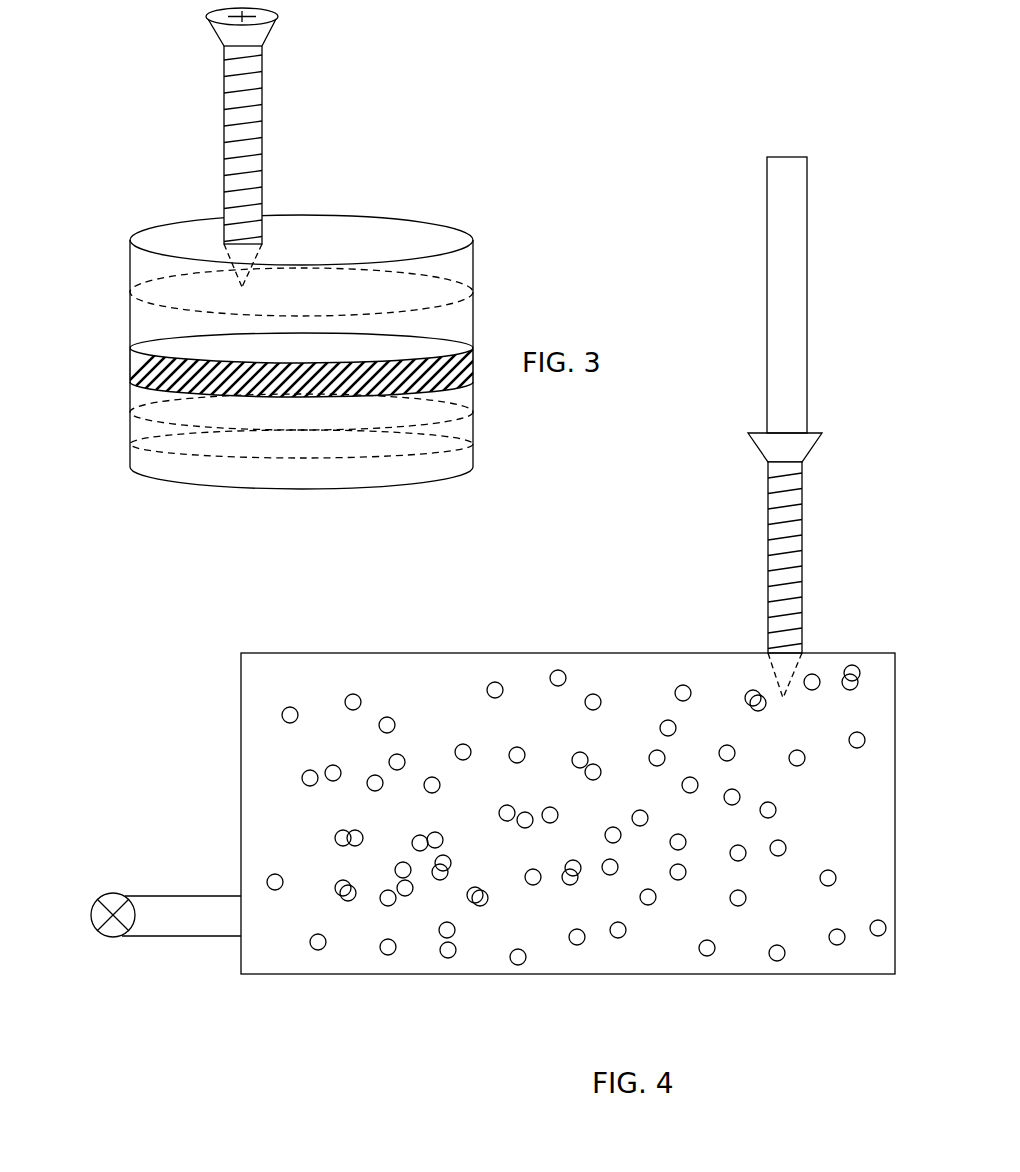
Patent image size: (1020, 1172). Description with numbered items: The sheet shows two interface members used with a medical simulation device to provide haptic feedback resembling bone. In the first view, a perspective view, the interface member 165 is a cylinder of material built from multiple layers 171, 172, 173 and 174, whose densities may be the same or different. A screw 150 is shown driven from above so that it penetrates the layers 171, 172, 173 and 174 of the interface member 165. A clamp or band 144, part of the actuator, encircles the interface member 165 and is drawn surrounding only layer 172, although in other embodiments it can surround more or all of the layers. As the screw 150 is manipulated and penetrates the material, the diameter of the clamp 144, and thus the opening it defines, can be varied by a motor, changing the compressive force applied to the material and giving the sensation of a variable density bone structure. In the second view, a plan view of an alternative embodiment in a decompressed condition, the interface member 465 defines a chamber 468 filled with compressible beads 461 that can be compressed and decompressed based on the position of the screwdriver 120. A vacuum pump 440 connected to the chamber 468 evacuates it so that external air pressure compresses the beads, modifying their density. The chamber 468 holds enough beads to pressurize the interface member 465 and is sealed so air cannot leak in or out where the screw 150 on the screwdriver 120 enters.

In FIG. 3, the screw 150 is at (253, 73).
In FIG. 4, the screw 150 is at (795, 509).
In FIG. 3, the interface member 165 is at (477, 176).
In FIG. 3, the layer 171 is at (130, 262).
In FIG. 3, the layer 172 is at (130, 323).
In FIG. 3, the layer 173 is at (130, 421).
In FIG. 3, the layer 174 is at (130, 458).
In FIG. 3, the clamp or band 144 is at (473, 352).
In FIG. 4, the screwdriver 120 is at (797, 251).
In FIG. 4, the interface member 465 is at (114, 696).
In FIG. 4, the chamber 468 is at (420, 680).
In FIG. 4, the vacuum pump 440 is at (120, 927).
In FIG. 4, the particles 461 is at (708, 956).